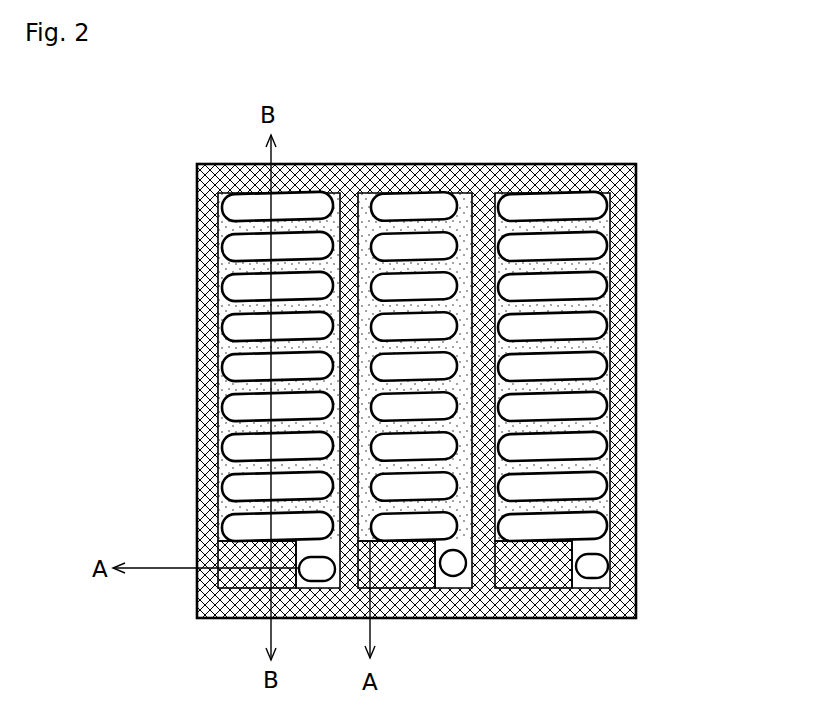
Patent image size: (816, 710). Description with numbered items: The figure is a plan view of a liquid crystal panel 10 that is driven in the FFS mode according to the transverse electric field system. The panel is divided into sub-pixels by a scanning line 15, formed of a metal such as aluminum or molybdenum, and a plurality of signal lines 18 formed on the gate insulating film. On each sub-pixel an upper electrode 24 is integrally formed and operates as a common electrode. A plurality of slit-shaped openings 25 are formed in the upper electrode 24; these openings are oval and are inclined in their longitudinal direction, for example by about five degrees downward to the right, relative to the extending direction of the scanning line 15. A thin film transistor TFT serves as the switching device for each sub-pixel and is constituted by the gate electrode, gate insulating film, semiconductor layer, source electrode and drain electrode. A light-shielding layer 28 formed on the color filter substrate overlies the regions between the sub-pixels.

The display device 10 is at (163, 98).
The sealing frame 15 is at (408, 176).
The partition wall 18 is at (208, 242).
The pixel electrode 24 is at (240, 310).
The light emitting region 25 is at (238, 366).
The contact portion 28 is at (200, 497).
The thin film transistor TFT is at (215, 549).